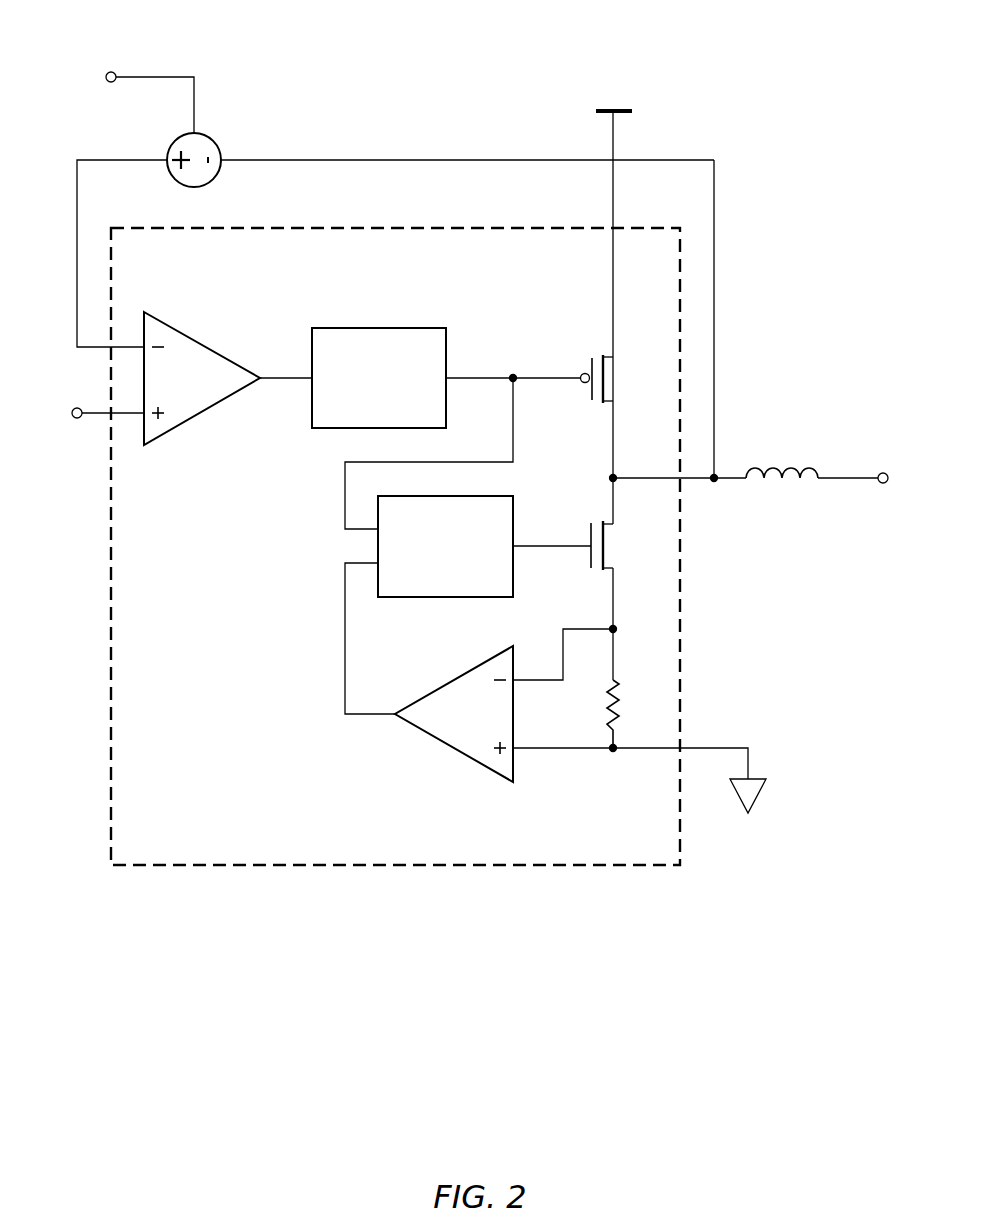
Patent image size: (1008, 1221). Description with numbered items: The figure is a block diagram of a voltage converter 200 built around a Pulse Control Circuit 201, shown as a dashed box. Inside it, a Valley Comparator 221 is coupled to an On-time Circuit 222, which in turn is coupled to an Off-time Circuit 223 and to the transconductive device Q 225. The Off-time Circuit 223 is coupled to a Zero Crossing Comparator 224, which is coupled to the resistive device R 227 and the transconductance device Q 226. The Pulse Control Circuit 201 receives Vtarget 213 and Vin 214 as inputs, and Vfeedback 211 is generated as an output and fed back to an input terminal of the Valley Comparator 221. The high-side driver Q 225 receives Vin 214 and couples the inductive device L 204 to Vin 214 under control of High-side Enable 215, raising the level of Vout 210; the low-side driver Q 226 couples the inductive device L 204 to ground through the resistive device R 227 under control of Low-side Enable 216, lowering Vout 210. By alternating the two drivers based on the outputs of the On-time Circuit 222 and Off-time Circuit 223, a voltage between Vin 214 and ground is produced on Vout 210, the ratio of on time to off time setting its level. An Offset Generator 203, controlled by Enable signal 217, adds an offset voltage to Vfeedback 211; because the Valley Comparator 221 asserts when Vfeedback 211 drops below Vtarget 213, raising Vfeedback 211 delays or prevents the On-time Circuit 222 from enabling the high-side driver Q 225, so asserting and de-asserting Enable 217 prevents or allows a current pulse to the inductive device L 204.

The power converter 200 is at (542, 280).
The pulse control circuit 201 is at (395, 546).
The offset generator 203 is at (217, 139).
The inductive device L 204 is at (715, 460).
The Vout 210 is at (859, 450).
The Vfeedback 211 is at (98, 240).
The Vtarget 213 is at (96, 436).
The Vin 214 is at (614, 210).
The High-side Enable 215 is at (462, 421).
The Low-side Enable 216 is at (552, 515).
The Enable signal 217 is at (117, 96).
The valley comparator 221 is at (228, 354).
The on-time circuit 222 is at (379, 378).
The off-time circuit 223 is at (445, 546).
The zero crossing comparator 224 is at (479, 700).
The transconductive device Q (high-side driver) 225 is at (608, 379).
The transconductance device Q (low-side driver) 226 is at (615, 540).
The resistive device R 227 is at (639, 746).